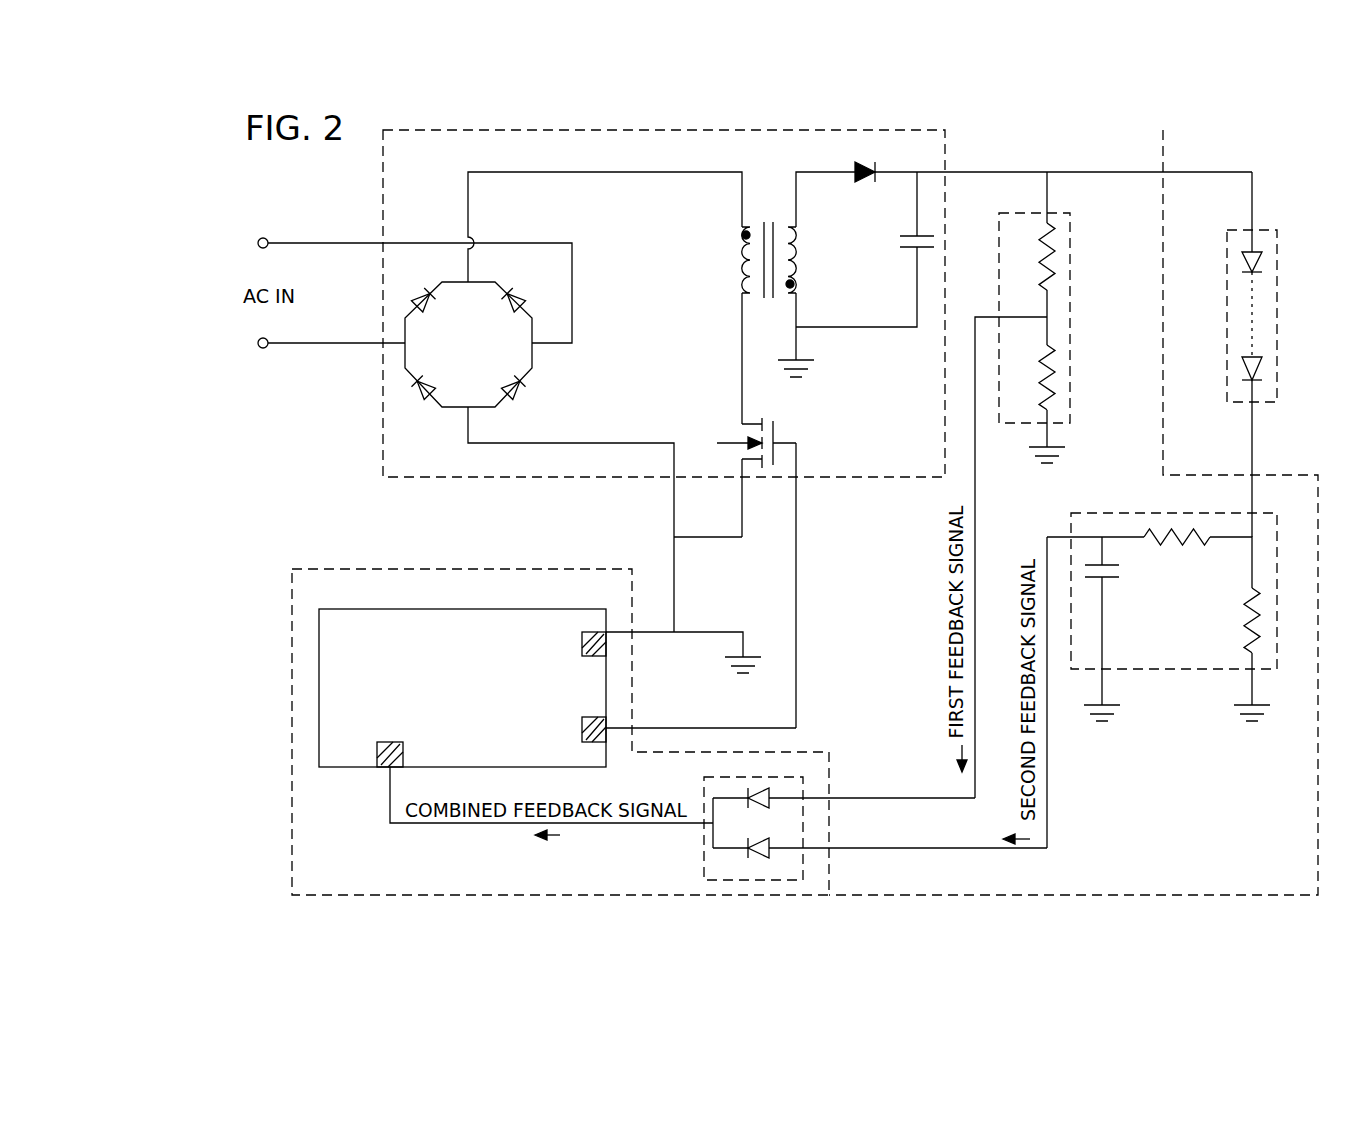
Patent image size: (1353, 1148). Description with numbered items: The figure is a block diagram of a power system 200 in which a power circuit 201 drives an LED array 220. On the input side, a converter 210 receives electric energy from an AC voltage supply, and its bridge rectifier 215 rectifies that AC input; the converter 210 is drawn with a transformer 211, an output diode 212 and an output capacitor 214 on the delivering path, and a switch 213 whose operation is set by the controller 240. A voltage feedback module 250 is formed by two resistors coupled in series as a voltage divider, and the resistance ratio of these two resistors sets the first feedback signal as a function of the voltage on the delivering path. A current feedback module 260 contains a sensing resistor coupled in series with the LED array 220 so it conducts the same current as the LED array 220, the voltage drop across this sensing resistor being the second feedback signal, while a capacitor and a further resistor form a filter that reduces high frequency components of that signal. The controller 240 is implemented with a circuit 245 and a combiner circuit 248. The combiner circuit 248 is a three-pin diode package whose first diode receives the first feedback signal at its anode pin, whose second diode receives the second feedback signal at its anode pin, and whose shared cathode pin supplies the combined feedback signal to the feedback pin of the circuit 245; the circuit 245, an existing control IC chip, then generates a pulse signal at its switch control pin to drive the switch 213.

The power system 200 is at (1256, 120).
The power circuit 201 is at (1050, 132).
The converter 210 is at (383, 190).
The transformer 211 is at (749, 249).
The output diode 212 is at (857, 165).
The switch 213 is at (778, 427).
The output capacitor 214 is at (900, 241).
The bridge rectifier 215 is at (535, 350).
The LED array 220 is at (1277, 292).
The controller 240 is at (357, 569).
The circuit 245 is at (444, 609).
The combiner circuit 248 is at (703, 857).
The voltage feedback module 250 is at (1070, 250).
The current feedback module 260 is at (1113, 513).